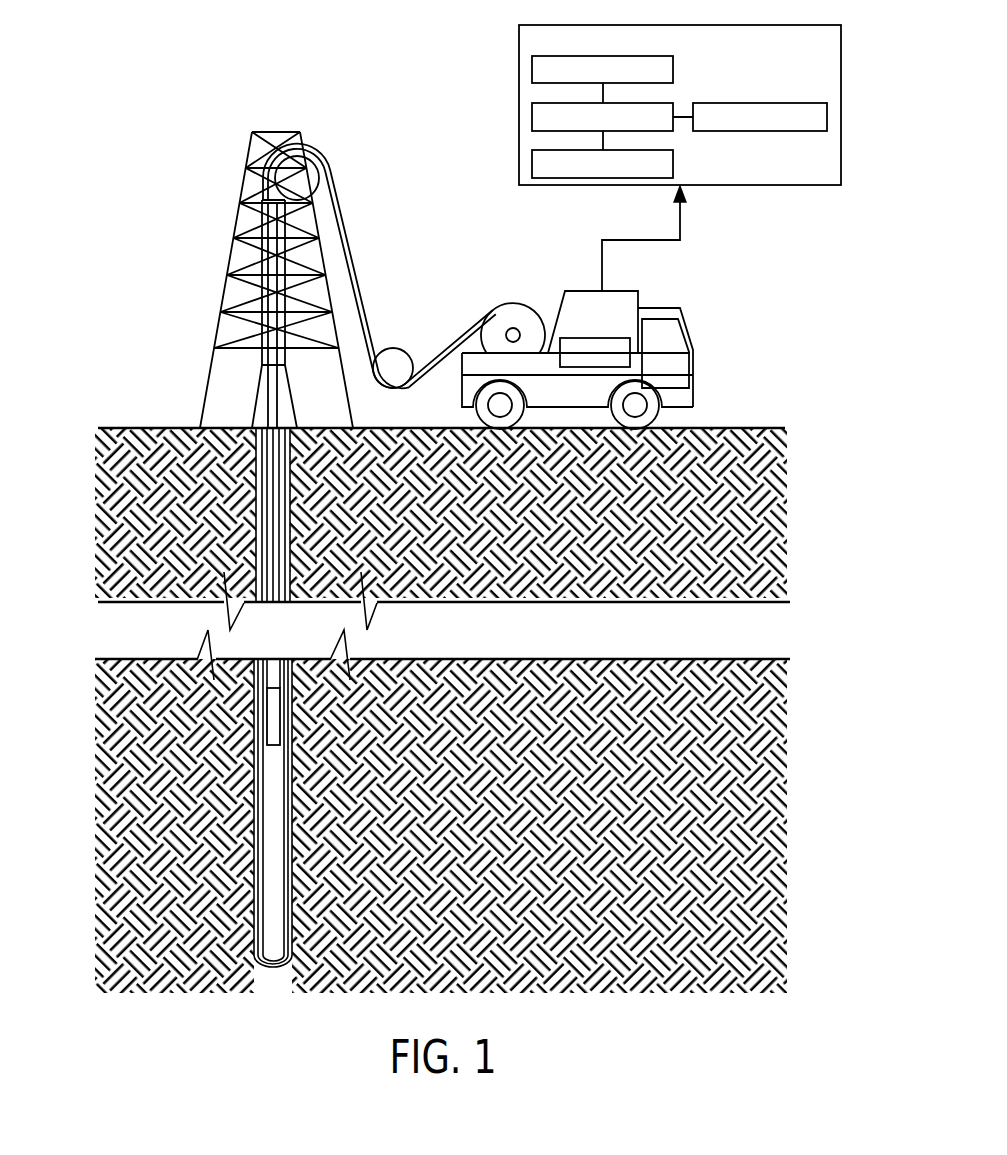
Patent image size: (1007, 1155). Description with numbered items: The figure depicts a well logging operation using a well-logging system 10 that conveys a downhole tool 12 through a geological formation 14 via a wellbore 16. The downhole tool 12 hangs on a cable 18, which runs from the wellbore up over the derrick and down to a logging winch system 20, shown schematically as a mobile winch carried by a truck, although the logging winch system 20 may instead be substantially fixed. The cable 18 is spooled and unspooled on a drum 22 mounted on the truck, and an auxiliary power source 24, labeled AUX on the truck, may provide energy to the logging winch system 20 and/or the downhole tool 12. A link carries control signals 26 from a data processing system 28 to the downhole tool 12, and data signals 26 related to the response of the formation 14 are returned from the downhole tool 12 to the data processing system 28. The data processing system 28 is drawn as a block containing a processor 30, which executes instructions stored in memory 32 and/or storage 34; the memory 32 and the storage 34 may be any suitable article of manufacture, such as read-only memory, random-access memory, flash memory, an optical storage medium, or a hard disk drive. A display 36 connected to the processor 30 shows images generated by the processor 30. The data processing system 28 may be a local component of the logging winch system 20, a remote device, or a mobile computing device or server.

The well-logging system 10 is at (166, 182).
The downhole tool 12 is at (264, 695).
The geological formation 14 is at (107, 765).
The wellbore 16 is at (241, 485).
The cable 18 is at (362, 271).
The logging winch system 20 is at (582, 287).
The drum 22 is at (508, 305).
The auxiliary power source 24 is at (580, 338).
The control signals / data signals 26 is at (680, 208).
The data processing system 28 is at (680, 25).
The processor 30 is at (652, 103).
The memory 32 is at (532, 70).
The storage 34 is at (673, 162).
The display 36 is at (760, 103).